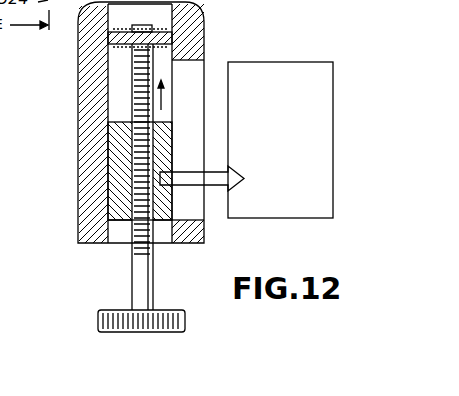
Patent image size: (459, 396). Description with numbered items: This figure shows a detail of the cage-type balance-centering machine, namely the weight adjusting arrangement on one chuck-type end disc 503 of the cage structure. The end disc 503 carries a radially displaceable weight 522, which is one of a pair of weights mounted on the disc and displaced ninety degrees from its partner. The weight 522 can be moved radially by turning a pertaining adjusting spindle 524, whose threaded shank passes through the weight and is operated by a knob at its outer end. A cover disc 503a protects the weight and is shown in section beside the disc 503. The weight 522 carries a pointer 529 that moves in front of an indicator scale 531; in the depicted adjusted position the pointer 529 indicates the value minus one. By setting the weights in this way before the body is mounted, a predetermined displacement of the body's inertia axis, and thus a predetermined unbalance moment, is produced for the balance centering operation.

The end disc 503 is at (204, 12).
The cover disc 503a is at (92, 58).
The weight 522 is at (108, 203).
The adjusting spindle 524 is at (155, 280).
The pointer 529 is at (220, 189).
The indicator scale 531 is at (292, 49).